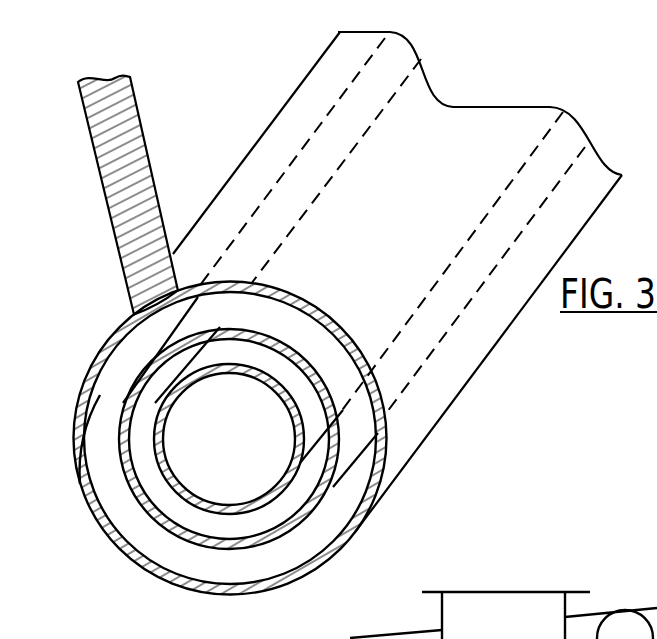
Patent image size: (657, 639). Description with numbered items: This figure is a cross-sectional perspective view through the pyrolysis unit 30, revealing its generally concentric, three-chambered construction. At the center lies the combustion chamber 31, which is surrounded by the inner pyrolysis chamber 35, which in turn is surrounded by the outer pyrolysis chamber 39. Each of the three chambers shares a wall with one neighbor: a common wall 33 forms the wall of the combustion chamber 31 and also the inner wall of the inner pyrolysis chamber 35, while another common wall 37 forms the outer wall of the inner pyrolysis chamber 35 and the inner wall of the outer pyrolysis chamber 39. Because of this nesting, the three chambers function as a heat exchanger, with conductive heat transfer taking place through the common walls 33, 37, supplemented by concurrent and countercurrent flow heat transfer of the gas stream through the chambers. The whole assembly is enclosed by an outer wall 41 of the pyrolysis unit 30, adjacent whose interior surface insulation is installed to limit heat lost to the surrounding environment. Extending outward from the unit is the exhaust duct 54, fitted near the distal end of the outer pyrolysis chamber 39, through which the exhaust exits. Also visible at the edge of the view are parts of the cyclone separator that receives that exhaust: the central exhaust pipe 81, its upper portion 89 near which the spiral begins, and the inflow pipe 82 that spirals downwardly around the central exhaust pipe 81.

The pyrolysis unit 30 is at (464, 430).
The combustion chamber 31 is at (207, 472).
The common wall 33 is at (157, 397).
The inner pyrolysis chamber 35 is at (210, 525).
The common wall 37 is at (117, 440).
The outer pyrolysis chamber 39 is at (280, 563).
The outer wall 41 is at (80, 484).
The exhaust duct 54 is at (150, 155).
The central exhaust pipe 81 is at (481, 592).
The upper portion 89 is at (522, 615).
The inflow pipe 82 is at (627, 633).